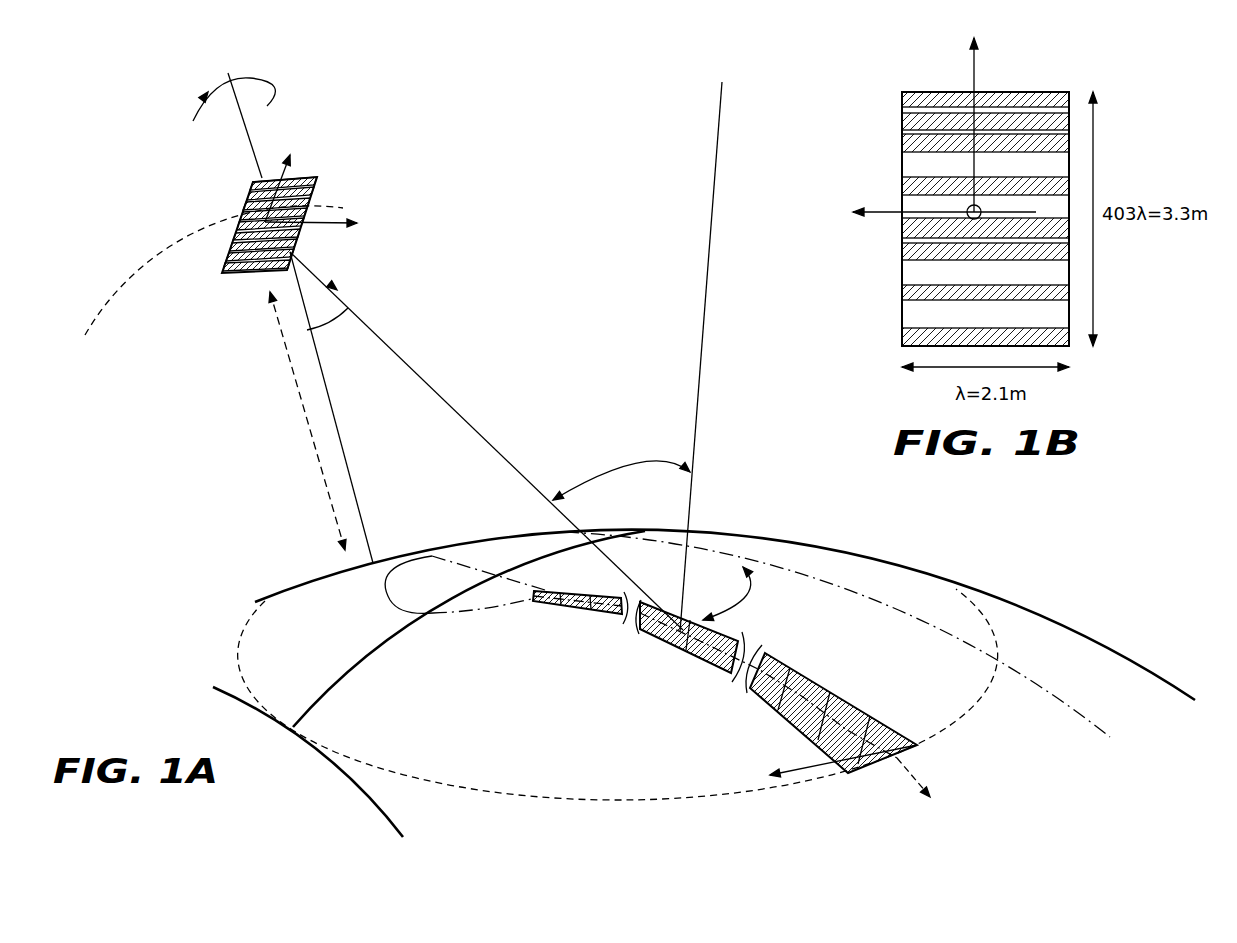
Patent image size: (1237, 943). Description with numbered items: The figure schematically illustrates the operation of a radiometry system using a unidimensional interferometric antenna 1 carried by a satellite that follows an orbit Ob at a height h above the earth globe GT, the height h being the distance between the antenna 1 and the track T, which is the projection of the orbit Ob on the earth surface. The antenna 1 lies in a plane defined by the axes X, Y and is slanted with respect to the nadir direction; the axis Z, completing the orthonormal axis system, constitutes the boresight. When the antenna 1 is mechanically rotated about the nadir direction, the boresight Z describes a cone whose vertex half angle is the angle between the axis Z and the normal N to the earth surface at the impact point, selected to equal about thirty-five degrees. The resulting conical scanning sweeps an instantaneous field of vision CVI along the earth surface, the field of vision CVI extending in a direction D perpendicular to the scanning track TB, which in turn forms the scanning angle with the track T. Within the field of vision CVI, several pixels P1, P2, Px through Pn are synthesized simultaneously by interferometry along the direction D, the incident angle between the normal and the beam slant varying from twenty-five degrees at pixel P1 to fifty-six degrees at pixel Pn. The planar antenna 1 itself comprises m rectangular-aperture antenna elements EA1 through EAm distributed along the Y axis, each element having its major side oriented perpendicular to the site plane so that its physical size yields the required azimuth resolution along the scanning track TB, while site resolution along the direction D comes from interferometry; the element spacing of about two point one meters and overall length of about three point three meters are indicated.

In FIG. 1A, the interferometric antenna 1 is at (338, 172).
In FIG. 1B, the interferometric antenna 1 is at (1137, 135).
In FIG. 1A, the orbit Ob is at (350, 207).
In FIG. 1A, the X axis X is at (317, 227).
In FIG. 1B, the X axis X is at (939, 198).
In FIG. 1A, the Y axis Y is at (284, 182).
In FIG. 1B, the Y axis Y is at (983, 123).
In FIG. 1A, the Z axis (boresight) Z is at (486, 441).
In FIG. 1B, the Z axis (boresight) Z is at (965, 216).
In FIG. 1A, the height of the orbit h is at (320, 468).
In FIG. 1A, the normal N is at (720, 137).
In FIG. 1A, the earth globe GT is at (1020, 607).
In FIG. 1A, the track T is at (1050, 690).
In FIG. 1A, the first pixel P1 is at (538, 600).
In FIG. 1A, the second pixel P2 is at (557, 603).
In FIG. 1A, the intermediate pixel Px is at (670, 632).
In FIG. 1A, the last pixel Pn is at (887, 720).
In FIG. 1A, the instantaneous field of vision CVI is at (844, 705).
In FIG. 1A, the track of the scanning TB is at (758, 777).
In FIG. 1A, the direction D is at (924, 783).
In FIG. 1B, the first antenna element EA1 is at (1057, 95).
In FIG. 1B, the last antenna element EAm is at (1058, 340).